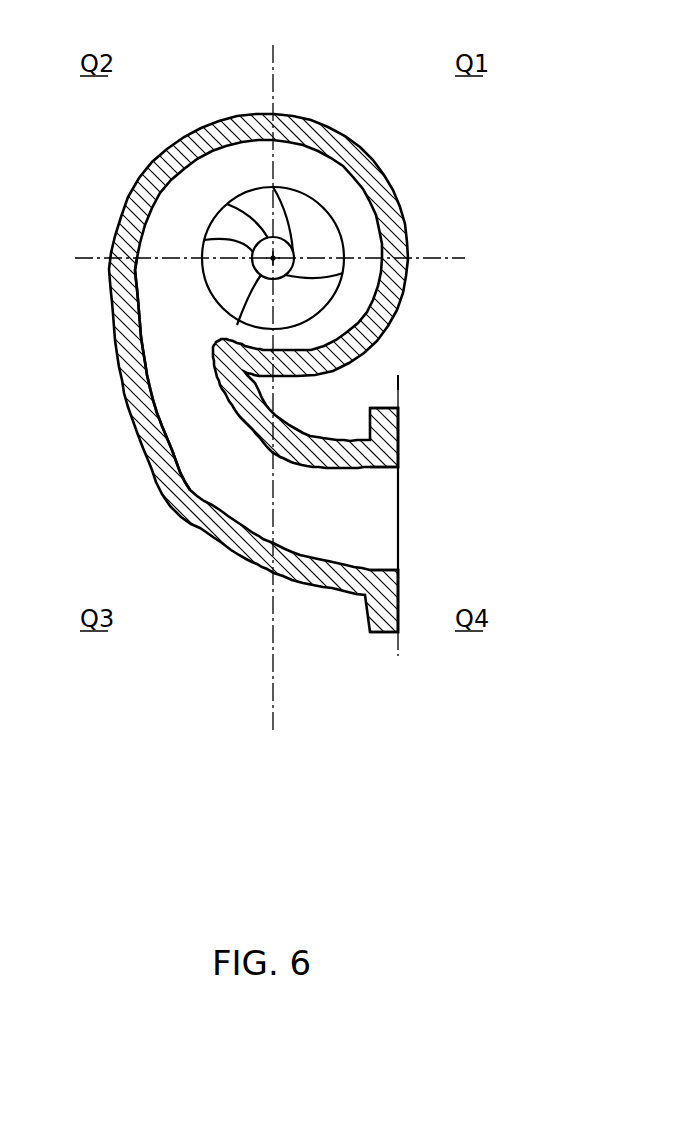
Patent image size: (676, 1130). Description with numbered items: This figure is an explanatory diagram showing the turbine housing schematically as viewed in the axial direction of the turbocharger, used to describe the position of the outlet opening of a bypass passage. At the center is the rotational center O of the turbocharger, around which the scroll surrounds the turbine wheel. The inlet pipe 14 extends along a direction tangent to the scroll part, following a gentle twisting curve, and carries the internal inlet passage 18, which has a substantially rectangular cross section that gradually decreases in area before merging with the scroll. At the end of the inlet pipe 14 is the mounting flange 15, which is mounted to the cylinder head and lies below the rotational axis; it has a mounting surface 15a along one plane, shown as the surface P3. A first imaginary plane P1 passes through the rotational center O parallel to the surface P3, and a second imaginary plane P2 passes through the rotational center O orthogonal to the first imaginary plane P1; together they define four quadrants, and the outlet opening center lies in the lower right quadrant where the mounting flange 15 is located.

The inlet pipe 14 is at (207, 530).
The mounting flange 15 is at (383, 630).
The mounting surface 15a is at (398, 575).
The inlet passage 18 is at (193, 445).
The first imaginary plane P1 is at (277, 97).
The second imaginary plane P2 is at (427, 258).
The surface of the mounting flange P3 is at (400, 387).
The rotational center O is at (284, 246).